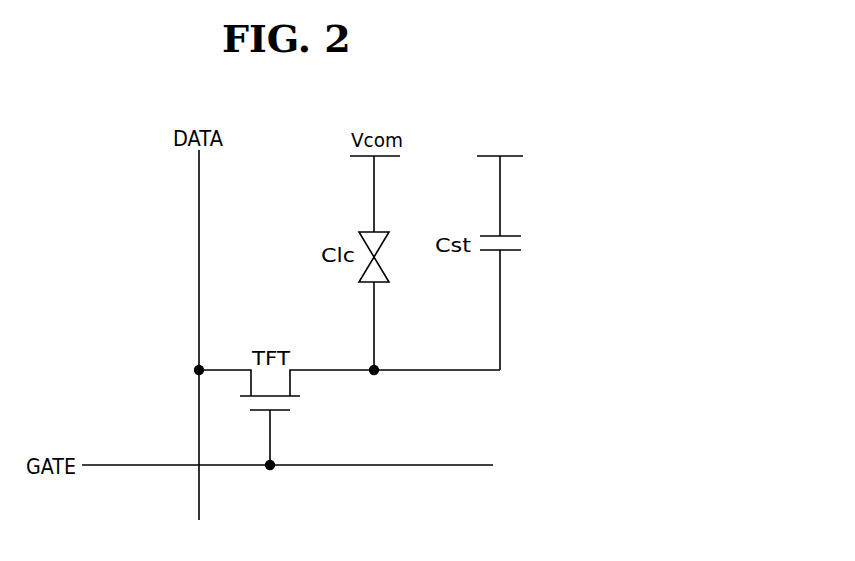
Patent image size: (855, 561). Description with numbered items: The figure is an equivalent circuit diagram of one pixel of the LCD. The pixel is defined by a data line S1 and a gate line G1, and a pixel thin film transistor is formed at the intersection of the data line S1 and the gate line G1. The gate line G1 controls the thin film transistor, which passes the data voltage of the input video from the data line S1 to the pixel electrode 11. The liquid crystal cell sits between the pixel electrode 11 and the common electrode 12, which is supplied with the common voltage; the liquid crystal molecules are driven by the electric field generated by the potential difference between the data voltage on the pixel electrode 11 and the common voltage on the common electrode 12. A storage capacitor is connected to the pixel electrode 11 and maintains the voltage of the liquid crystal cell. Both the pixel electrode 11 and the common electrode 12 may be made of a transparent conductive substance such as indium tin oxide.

The data line S1 is at (199, 190).
The gate line G1 is at (400, 467).
The common electrode 12 is at (380, 230).
The pixel electrode 11 is at (379, 284).